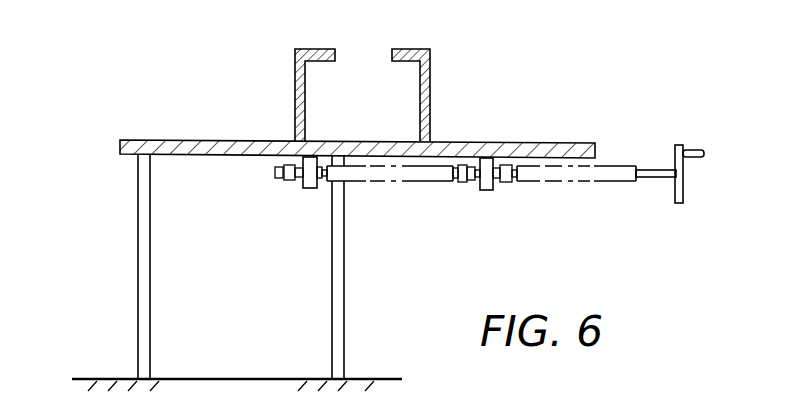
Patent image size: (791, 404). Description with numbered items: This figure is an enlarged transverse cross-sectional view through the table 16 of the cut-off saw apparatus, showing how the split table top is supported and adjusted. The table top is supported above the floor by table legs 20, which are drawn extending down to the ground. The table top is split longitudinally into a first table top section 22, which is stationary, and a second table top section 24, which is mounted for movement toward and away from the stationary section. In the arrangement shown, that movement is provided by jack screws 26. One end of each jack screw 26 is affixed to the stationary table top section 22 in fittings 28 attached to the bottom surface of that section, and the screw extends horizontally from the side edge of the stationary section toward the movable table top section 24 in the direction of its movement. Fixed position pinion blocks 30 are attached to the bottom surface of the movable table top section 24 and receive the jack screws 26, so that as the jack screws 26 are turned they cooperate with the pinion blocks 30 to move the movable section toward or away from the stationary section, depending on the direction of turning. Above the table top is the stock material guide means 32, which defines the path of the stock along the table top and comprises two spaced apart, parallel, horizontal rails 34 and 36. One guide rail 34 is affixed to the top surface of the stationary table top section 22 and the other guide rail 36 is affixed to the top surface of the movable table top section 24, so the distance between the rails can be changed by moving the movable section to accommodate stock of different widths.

The table 16 is at (224, 77).
The table legs 20 is at (152, 333).
The first table top section 22 is at (215, 140).
The second table top section 24 is at (500, 142).
The jack screws 26 is at (592, 183).
The fittings 28 is at (310, 188).
The pinion blocks 30 is at (485, 191).
The stock material guide means 32 is at (455, 52).
The guide rail 34 is at (314, 50).
The guide rail 36 is at (400, 52).